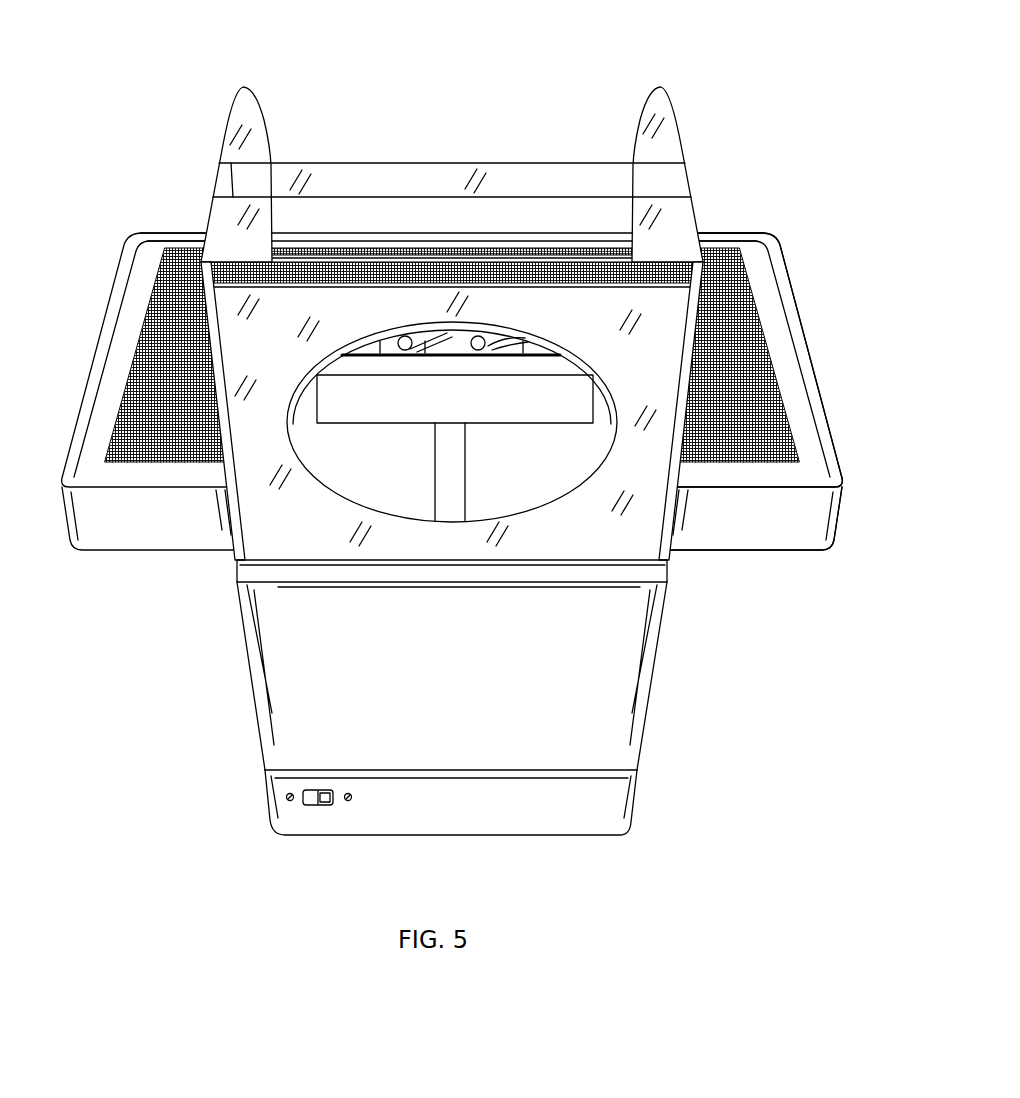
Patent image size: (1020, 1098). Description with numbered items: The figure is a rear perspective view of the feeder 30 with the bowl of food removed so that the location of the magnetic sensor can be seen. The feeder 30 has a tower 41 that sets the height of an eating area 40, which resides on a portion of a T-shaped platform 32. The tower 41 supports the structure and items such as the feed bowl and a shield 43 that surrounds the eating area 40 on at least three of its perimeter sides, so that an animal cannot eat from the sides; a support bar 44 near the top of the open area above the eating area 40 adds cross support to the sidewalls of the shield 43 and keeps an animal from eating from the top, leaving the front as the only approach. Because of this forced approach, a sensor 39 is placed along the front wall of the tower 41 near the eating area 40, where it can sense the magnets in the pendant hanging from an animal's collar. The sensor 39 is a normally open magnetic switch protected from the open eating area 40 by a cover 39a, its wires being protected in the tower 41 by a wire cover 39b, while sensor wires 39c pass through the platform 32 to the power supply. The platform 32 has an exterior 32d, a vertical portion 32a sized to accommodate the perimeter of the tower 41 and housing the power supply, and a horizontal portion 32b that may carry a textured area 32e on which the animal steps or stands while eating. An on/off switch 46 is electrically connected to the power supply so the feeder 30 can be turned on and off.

The feeder 30 is at (188, 34).
The platform 32 is at (787, 392).
The vertical portion of the T-shaped platform 32a is at (613, 815).
The horizontal portion of the T-shaped platform 32b is at (834, 535).
The exterior of the platform 32d is at (838, 447).
The textured area 32e is at (142, 351).
The sensor 39 is at (460, 345).
The cover 39a is at (556, 411).
The wire cover 39b is at (440, 488).
The sensor wires 39c is at (413, 337).
The eating area 40 is at (280, 473).
The tower 41 is at (637, 635).
The shield 43 is at (221, 133).
The support bar 44 is at (342, 160).
The on/off switch 46 is at (314, 807).